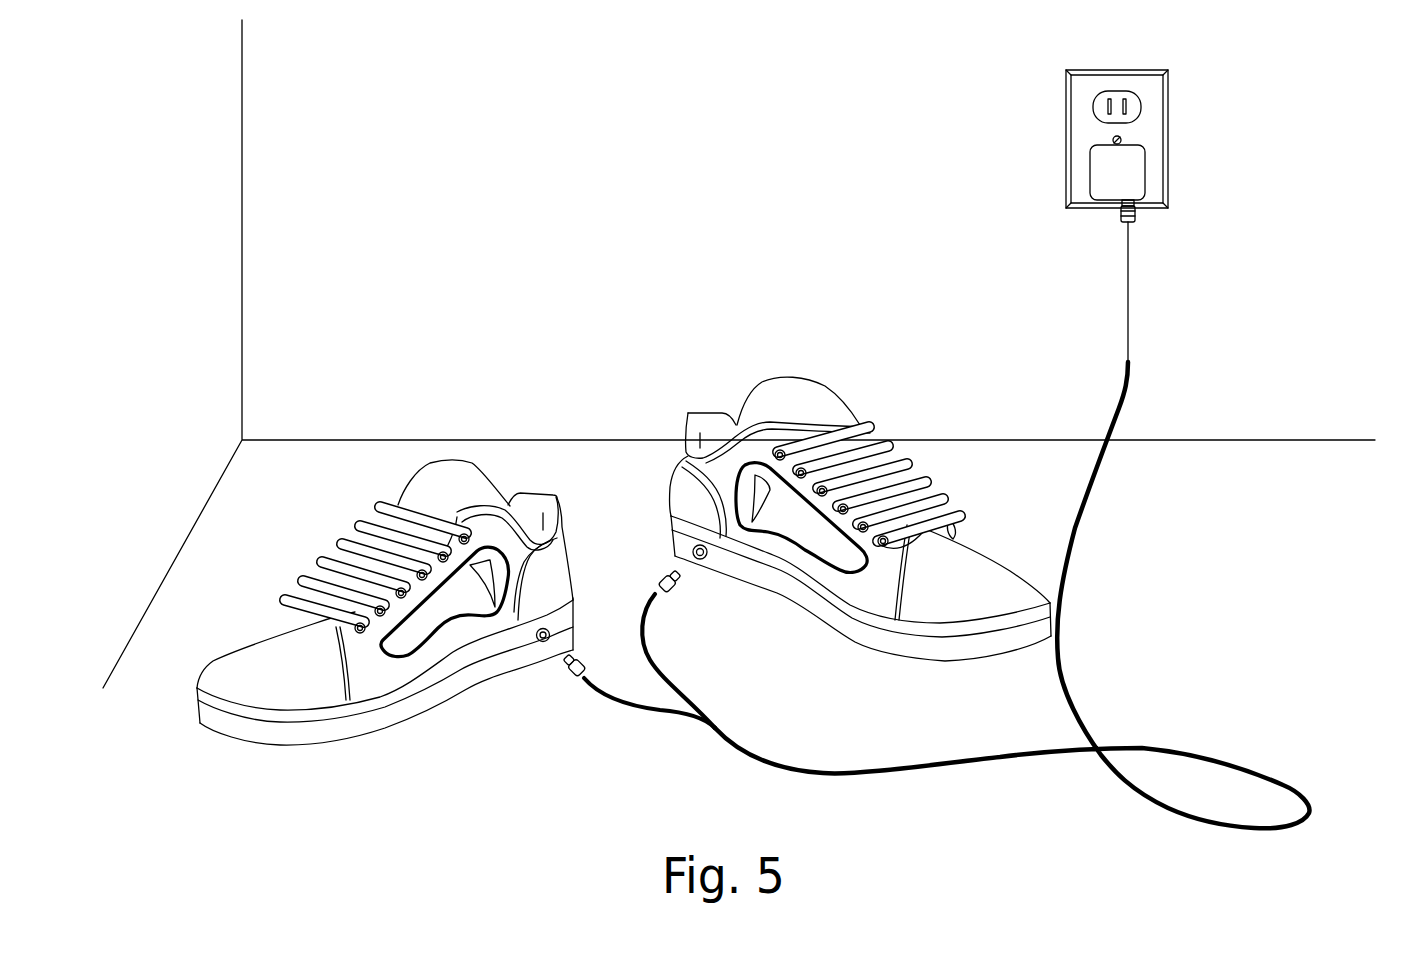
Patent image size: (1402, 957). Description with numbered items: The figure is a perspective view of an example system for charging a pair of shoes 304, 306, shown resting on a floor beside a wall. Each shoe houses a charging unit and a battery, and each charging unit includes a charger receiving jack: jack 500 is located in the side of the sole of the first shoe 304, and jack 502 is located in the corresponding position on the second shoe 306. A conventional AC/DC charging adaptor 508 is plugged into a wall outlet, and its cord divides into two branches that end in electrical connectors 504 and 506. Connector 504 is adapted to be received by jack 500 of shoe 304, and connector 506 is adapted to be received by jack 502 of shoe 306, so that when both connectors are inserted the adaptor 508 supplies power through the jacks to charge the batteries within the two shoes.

The shoe 304 is at (385, 566).
The shoe 306 is at (831, 506).
The charger receiving jack 500 is at (520, 654).
The charger receiving jack 502 is at (730, 562).
The first cable connector 504 is at (573, 701).
The second cable connector 506 is at (691, 599).
The power adapter 508 is at (1107, 165).